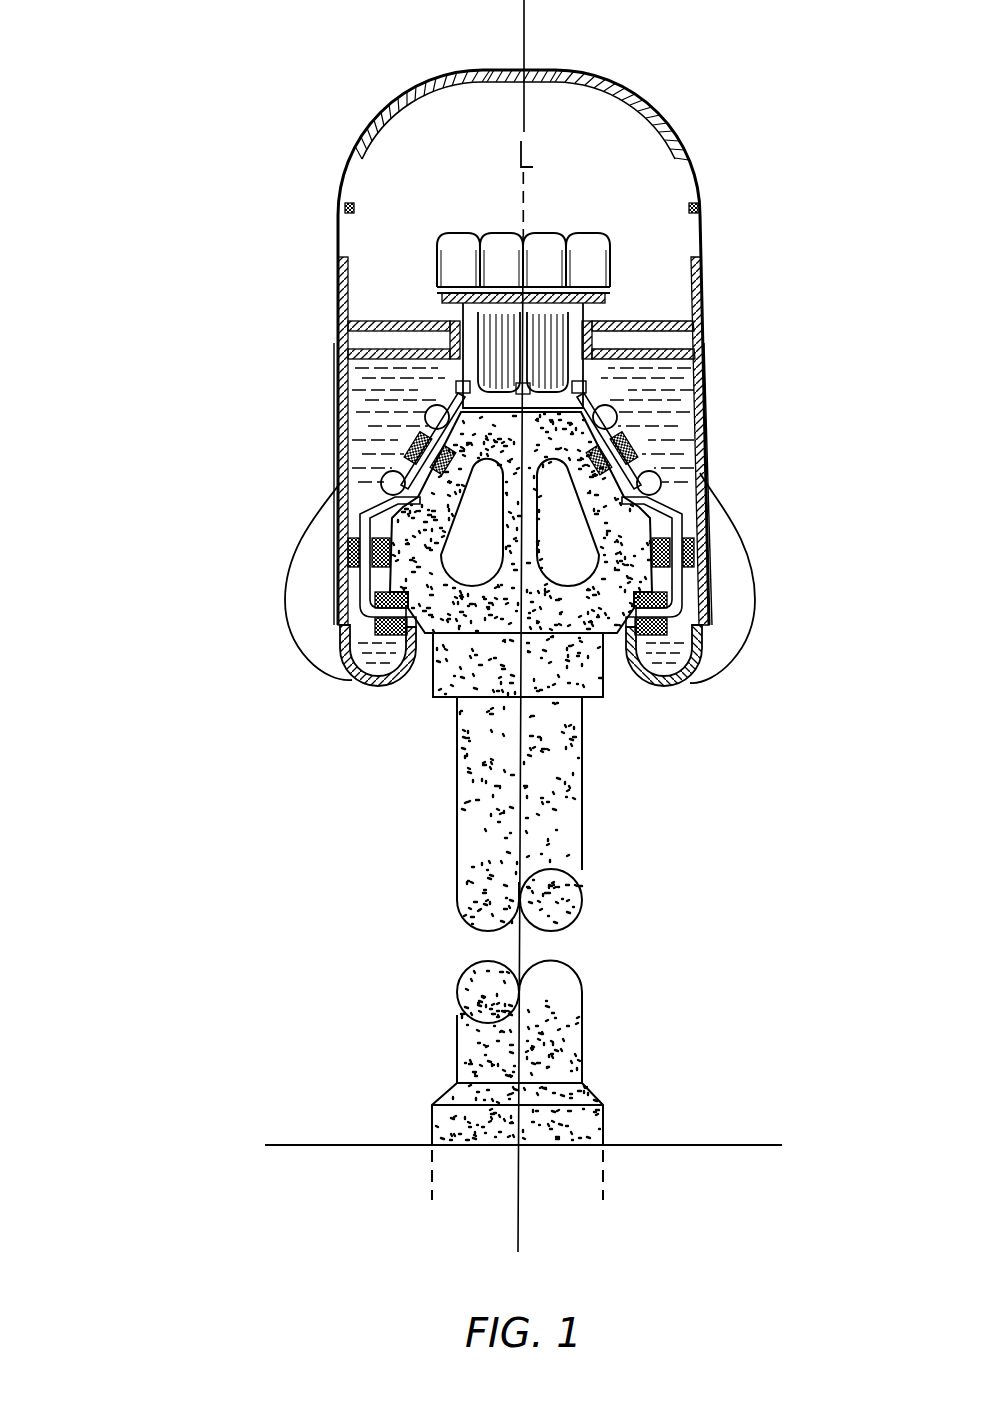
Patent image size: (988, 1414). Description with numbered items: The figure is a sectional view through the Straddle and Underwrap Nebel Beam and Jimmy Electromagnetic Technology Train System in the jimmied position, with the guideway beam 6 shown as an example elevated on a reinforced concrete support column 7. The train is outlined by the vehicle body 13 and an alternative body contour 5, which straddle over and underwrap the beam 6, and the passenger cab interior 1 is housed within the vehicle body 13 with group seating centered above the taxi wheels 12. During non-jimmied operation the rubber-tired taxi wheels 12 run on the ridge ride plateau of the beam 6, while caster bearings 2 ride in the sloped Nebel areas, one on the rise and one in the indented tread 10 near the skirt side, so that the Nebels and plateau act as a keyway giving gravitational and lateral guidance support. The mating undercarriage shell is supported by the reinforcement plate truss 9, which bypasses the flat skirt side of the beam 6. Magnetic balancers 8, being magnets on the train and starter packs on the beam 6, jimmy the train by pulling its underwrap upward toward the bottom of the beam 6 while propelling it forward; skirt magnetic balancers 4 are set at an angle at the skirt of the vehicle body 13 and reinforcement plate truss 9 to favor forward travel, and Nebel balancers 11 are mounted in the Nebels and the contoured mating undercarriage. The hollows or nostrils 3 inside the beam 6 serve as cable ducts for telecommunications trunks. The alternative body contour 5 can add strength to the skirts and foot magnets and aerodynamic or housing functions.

The passenger cab interior 1 is at (440, 158).
The caster bearings 2 is at (613, 420).
The hollows/nostrils 3 is at (572, 537).
The skirt magnetic balancers 4 is at (690, 579).
The alternative body contour 5 is at (735, 645).
The beam 6 is at (585, 603).
The reinforced concrete support columns 7 is at (478, 1043).
The magnetic balancers 8 is at (350, 600).
The reinforcement plate truss 9 is at (395, 600).
The tread 10 is at (338, 486).
The Nebel balancers 11 is at (418, 438).
The taxi wheels 12 is at (480, 332).
The vehicle body 13 is at (365, 135).